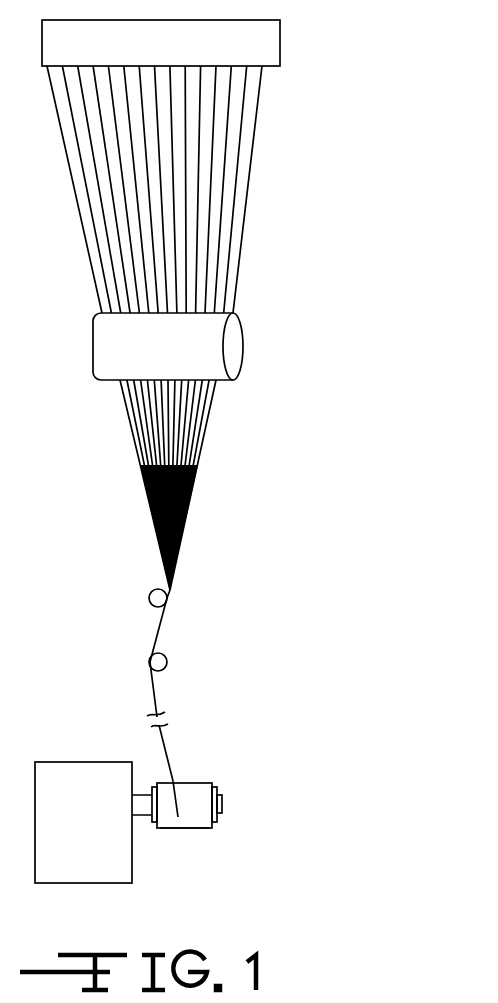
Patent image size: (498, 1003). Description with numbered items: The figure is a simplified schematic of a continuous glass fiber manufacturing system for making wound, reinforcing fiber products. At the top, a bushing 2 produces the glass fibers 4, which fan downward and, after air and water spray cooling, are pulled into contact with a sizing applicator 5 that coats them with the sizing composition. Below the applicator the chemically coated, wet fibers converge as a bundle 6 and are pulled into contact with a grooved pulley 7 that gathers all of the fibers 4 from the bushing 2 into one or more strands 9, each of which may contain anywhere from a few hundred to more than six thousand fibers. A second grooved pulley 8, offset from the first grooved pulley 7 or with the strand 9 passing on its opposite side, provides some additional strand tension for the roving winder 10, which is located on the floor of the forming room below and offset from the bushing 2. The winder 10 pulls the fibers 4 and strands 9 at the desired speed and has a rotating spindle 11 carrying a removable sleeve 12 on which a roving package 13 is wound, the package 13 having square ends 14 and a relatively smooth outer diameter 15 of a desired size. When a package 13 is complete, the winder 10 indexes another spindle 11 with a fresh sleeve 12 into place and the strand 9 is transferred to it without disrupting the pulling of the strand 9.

The bushing 2 is at (273, 41).
The glass fibers 4 is at (217, 192).
The sizing applicator 5 is at (237, 343).
The fiber bundle 6 is at (205, 415).
The grooved pulley 7 is at (172, 598).
The second grooved pulley 8 is at (166, 662).
The strand 9 is at (157, 698).
The roving winder 10 is at (68, 752).
The rotating spindle 11 is at (222, 805).
The removable sleeve 12 is at (212, 820).
The roving package 13 is at (198, 828).
The square ends 14 is at (210, 783).
The outer diameter 15 is at (178, 817).